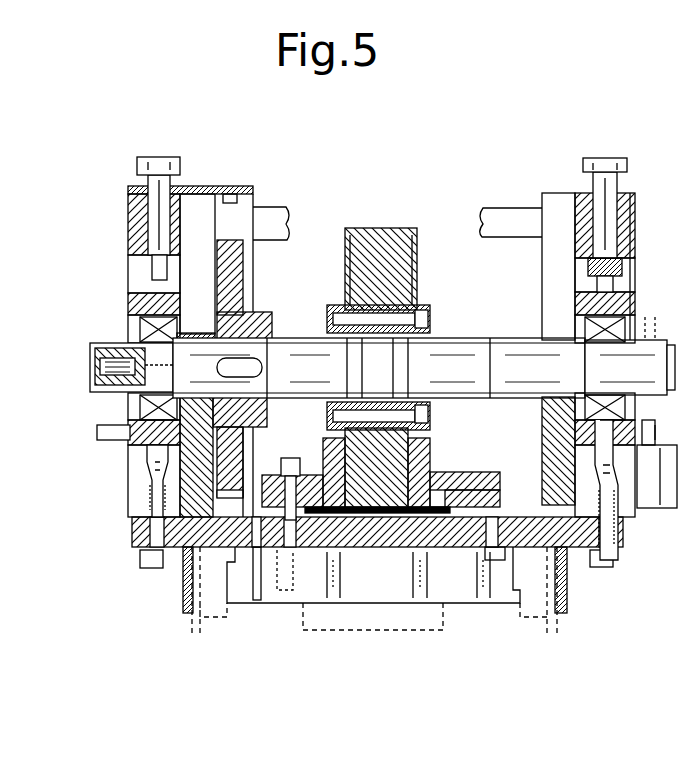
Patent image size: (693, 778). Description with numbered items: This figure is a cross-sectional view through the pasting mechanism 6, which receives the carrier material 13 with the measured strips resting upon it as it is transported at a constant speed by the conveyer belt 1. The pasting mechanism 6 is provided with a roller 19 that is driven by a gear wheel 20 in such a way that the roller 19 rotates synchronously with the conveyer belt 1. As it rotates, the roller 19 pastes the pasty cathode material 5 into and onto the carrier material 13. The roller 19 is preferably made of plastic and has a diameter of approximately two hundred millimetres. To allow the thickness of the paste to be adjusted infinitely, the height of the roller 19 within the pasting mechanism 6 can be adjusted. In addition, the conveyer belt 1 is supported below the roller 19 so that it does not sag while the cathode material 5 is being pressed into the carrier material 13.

The conveyer belt 1 is at (565, 555).
The pasty cathode material 5 is at (377, 603).
The carrier material 13 is at (372, 510).
The pasting mechanism 6 is at (637, 183).
The roller 19 is at (382, 240).
The gear wheel 20 is at (238, 240).